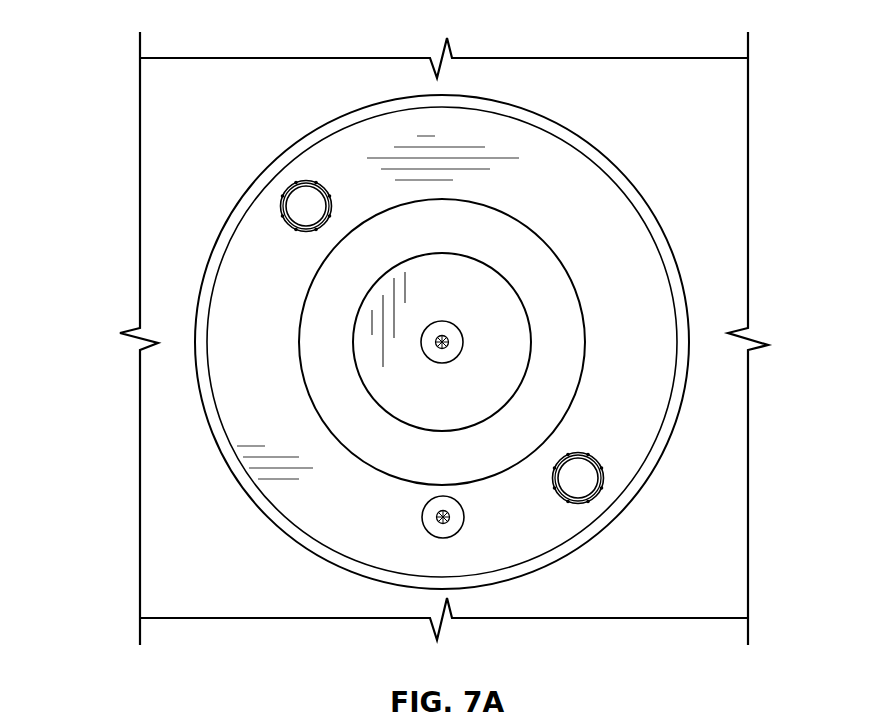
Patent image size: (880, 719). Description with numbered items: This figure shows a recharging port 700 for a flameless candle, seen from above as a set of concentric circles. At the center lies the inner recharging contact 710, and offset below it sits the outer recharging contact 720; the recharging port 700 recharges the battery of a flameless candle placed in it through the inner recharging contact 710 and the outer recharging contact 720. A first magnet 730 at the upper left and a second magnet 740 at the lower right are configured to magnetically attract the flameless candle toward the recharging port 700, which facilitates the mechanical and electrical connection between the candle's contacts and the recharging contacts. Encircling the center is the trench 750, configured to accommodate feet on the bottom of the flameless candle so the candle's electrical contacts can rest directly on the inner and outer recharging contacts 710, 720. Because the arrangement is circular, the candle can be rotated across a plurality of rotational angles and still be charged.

The recharging port 700 is at (104, 38).
The inner recharging contact 710 is at (464, 343).
The outer recharging contact 720 is at (443, 538).
The first magnet 730 is at (294, 181).
The second magnet 740 is at (600, 497).
The trench 750 is at (586, 348).